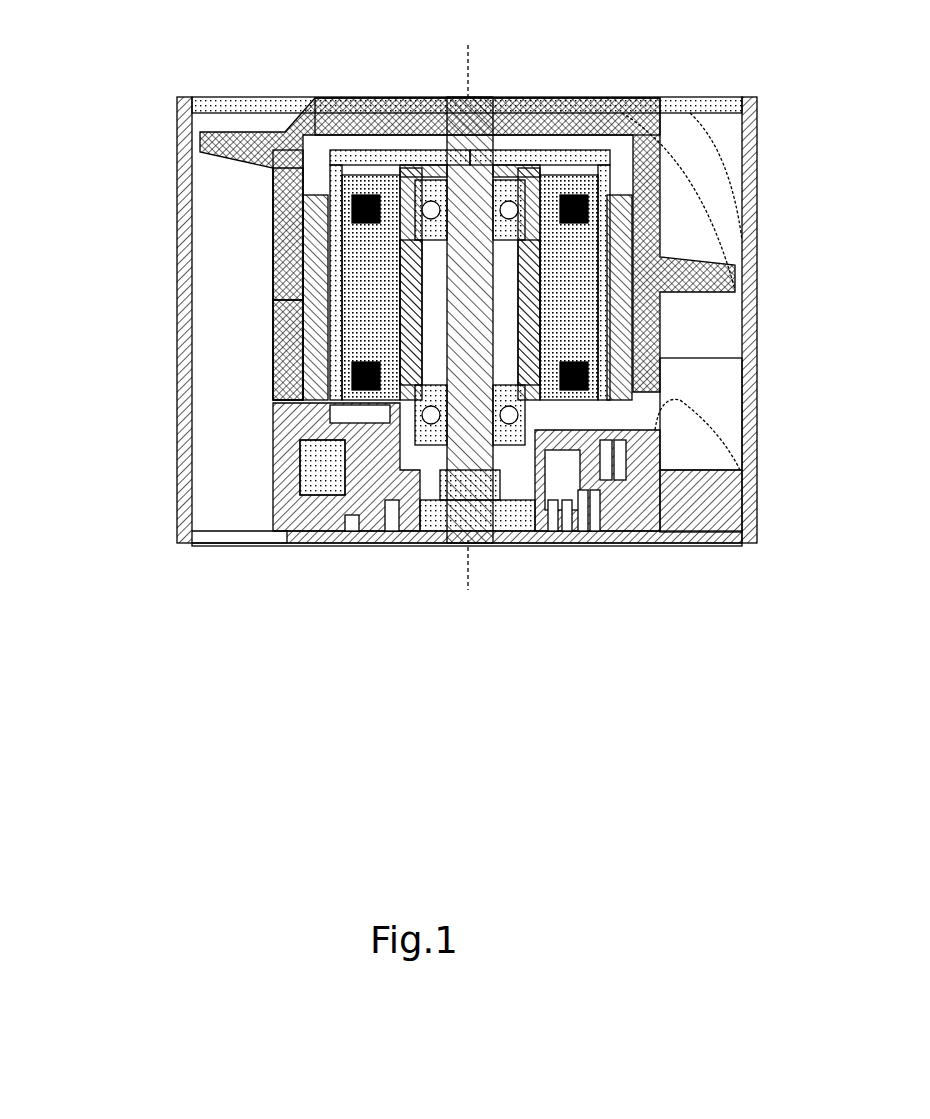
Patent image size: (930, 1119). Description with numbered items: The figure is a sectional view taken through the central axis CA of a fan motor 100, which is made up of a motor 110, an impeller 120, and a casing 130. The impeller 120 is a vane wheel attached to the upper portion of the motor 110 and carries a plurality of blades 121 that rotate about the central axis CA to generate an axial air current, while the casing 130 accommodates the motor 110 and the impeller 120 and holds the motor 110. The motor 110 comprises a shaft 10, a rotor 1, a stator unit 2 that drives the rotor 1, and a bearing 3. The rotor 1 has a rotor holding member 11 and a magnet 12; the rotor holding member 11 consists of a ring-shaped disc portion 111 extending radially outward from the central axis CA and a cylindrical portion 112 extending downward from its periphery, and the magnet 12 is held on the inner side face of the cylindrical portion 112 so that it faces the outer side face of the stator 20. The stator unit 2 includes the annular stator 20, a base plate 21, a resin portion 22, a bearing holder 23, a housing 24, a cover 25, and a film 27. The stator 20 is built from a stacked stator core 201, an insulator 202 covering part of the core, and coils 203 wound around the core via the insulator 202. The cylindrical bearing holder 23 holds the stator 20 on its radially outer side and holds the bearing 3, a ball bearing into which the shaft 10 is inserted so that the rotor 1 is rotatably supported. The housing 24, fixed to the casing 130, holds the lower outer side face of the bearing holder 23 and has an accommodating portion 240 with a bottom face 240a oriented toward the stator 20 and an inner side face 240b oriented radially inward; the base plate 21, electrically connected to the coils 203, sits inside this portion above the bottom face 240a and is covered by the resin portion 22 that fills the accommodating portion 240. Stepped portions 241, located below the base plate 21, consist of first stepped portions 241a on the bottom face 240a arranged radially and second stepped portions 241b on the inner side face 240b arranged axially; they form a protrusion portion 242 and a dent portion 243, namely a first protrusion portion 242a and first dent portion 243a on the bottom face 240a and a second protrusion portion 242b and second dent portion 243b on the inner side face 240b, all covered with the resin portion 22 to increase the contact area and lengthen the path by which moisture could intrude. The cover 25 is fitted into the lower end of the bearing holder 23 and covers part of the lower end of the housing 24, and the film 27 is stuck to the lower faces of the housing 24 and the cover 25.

The fan motor 100 is at (145, 76).
The rotor 1 is at (381, 276).
The shaft 10 is at (480, 110).
The rotor holding member 11 is at (182, 273).
The disc portion 111 is at (272, 175).
The cylindrical portion 112 is at (275, 225).
The magnet 12 is at (270, 244).
The impeller 120 is at (316, 98).
The blades 121 is at (278, 240).
The casing 130 is at (177, 128).
The motor 110 is at (668, 404).
The stator unit 2 is at (401, 423).
The stator 20 is at (347, 275).
The stator core 201 is at (345, 290).
The insulator 202 is at (312, 355).
The coils 203 is at (305, 378).
The base plate 21 is at (300, 415).
The resin portion 22 is at (300, 452).
The bearing holder 23 is at (300, 390).
The housing 24 is at (300, 496).
The accommodating portion 240 is at (300, 470).
The bottom face 240a is at (385, 548).
The inner side face 240b is at (390, 545).
The cover 25 is at (300, 530).
The film 27 is at (348, 545).
The bearing 3 is at (430, 545).
The stepped portions 241 is at (483, 598).
The first stepped portions 241a is at (567, 543).
The second stepped portions 241b is at (556, 543).
The protrusion portion 242 is at (695, 527).
The first protrusion portion 242a is at (625, 545).
The second protrusion portion 242b is at (618, 540).
The dent portion 243 is at (666, 587).
The first dent portion 243a is at (598, 543).
The second dent portion 243b is at (612, 543).
The central axis CA is at (463, 65).